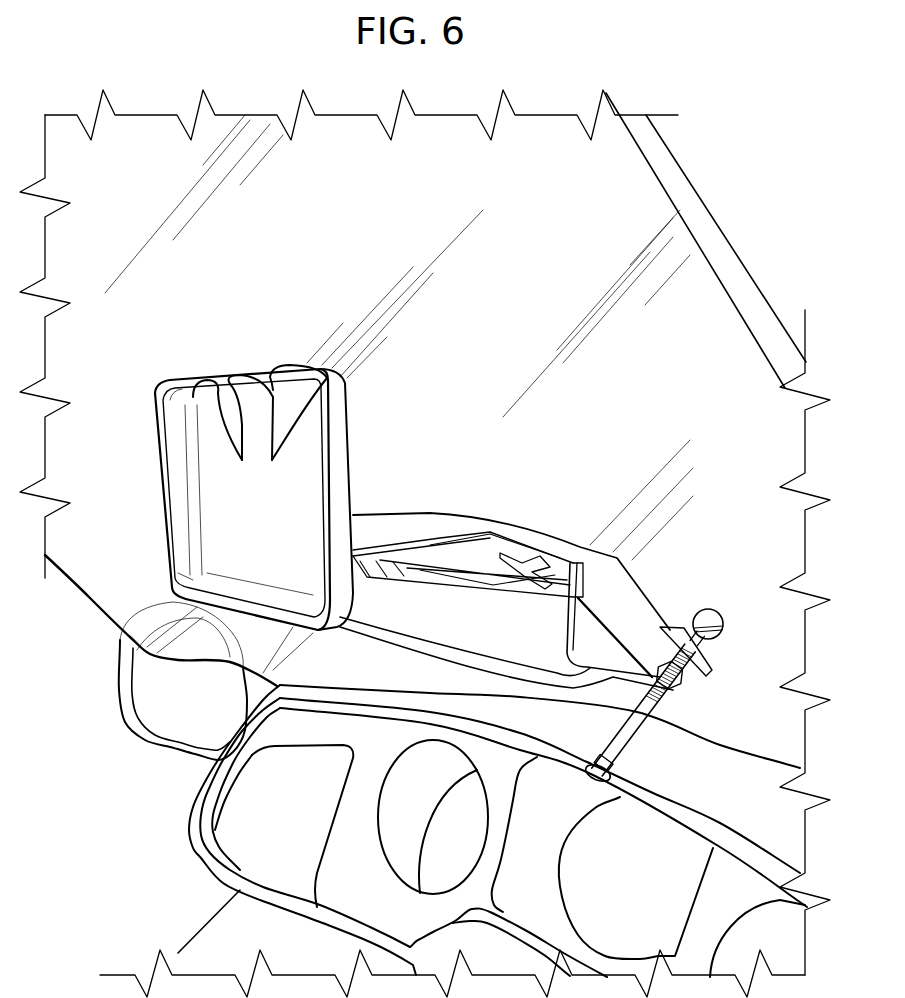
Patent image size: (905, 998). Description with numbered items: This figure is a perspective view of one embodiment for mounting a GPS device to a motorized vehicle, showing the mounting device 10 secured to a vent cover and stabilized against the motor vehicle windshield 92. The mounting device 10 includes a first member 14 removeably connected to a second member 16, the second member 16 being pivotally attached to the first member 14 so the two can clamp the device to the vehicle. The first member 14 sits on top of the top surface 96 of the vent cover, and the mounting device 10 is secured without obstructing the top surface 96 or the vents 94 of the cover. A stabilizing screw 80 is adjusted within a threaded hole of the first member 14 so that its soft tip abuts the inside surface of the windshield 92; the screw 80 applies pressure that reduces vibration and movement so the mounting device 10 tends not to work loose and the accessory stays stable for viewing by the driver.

The mounting device 10 is at (597, 417).
The first member 14 is at (390, 530).
The second member 16 is at (437, 553).
The stabilizing screw 80 is at (690, 680).
The windshield 92 is at (273, 173).
The vents 94 is at (543, 567).
The top surface 96 is at (500, 540).